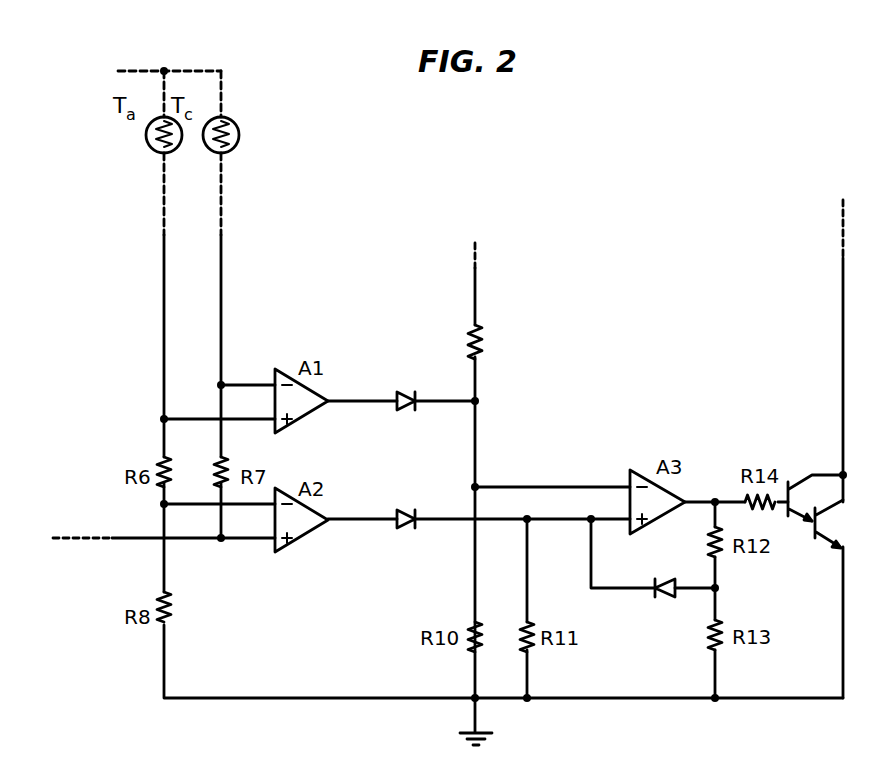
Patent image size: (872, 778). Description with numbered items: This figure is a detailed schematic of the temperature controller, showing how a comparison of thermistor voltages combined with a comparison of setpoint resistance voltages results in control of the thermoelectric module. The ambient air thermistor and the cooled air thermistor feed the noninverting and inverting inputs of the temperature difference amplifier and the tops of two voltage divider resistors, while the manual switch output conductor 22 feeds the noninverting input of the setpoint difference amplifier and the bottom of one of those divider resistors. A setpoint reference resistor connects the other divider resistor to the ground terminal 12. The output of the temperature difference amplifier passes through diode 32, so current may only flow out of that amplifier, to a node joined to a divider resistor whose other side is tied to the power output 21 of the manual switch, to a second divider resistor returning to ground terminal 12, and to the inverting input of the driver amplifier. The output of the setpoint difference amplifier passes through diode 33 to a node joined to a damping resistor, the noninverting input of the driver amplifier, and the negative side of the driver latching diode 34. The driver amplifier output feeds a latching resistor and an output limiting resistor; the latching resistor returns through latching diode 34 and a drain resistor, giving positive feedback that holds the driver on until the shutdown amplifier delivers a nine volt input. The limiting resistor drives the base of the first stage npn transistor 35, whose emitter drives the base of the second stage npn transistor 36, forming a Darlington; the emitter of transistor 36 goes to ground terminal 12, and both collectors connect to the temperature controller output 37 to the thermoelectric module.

The ground terminal 12 is at (458, 726).
The power output 21 is at (473, 269).
The output conductor 22 is at (112, 538).
The diode 32 is at (409, 417).
The diode 33 is at (409, 536).
The driver latching diode 34 is at (664, 604).
The first stage npn bipolar junction transistor 35 is at (800, 514).
The second stage npn bipolar junction transistor 36 is at (823, 538).
The temperature controller output 37 is at (843, 258).